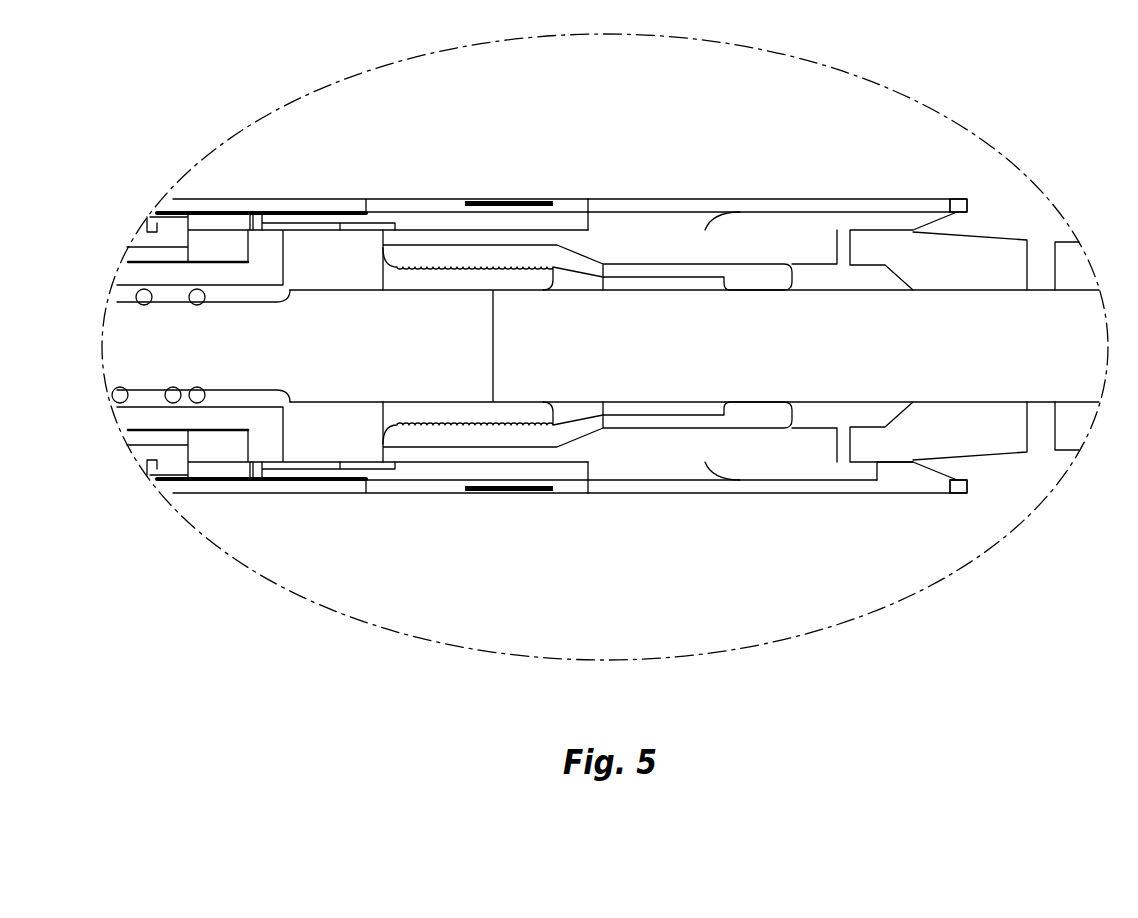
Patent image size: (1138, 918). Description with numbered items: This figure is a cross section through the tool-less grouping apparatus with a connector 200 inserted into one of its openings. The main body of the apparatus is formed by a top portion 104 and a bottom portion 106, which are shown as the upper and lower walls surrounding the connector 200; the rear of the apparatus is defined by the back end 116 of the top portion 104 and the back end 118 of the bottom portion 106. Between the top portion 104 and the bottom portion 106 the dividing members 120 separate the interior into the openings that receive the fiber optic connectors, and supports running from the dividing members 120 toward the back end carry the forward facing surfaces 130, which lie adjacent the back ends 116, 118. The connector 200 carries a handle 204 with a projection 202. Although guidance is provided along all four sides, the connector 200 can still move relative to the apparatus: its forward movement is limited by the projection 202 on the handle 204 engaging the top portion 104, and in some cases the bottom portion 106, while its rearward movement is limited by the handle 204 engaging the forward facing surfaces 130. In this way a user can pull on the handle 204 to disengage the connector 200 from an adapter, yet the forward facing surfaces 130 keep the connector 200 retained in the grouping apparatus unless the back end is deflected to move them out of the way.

The top portion 104 is at (852, 200).
The bottom portion 106 is at (655, 493).
The back end of the top portion 116 is at (967, 205).
The back end of the bottom portion 118 is at (967, 487).
The dividing member 120 is at (637, 220).
The forward facing surface 130 is at (877, 468).
The connector 200 is at (320, 266).
The projection 202 is at (408, 215).
The handle 204 is at (418, 468).